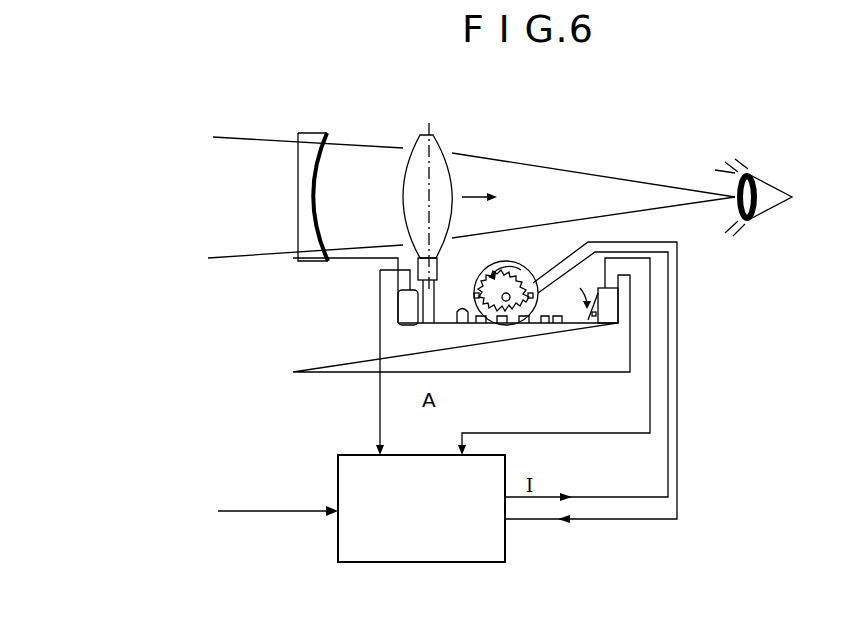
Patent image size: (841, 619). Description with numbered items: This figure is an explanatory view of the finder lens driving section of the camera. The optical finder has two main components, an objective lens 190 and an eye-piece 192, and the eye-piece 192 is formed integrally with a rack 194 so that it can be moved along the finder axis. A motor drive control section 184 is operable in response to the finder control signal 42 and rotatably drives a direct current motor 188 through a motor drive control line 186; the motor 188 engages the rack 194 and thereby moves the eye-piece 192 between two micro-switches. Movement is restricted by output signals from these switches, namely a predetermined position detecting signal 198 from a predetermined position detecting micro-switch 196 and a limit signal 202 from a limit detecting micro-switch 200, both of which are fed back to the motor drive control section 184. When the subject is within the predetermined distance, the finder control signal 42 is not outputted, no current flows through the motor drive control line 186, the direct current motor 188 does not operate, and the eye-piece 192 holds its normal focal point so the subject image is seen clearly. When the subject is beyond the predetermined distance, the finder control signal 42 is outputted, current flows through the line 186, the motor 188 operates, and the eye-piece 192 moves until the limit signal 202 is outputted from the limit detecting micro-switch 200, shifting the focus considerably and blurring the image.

The objective lens 190 is at (313, 133).
The eye-piece 192 is at (442, 148).
The direct current motor 188 is at (533, 275).
The predetermined position detecting micro-switch 196 is at (403, 302).
The rack 194 is at (463, 316).
The limit detecting micro-switch 200 is at (605, 323).
The predetermined position detecting signal 198 is at (378, 405).
The motor drive control section 184 is at (430, 465).
The limit signal 202 is at (538, 433).
The finder control signal 42 is at (257, 510).
The motor drive control line 186 is at (647, 519).